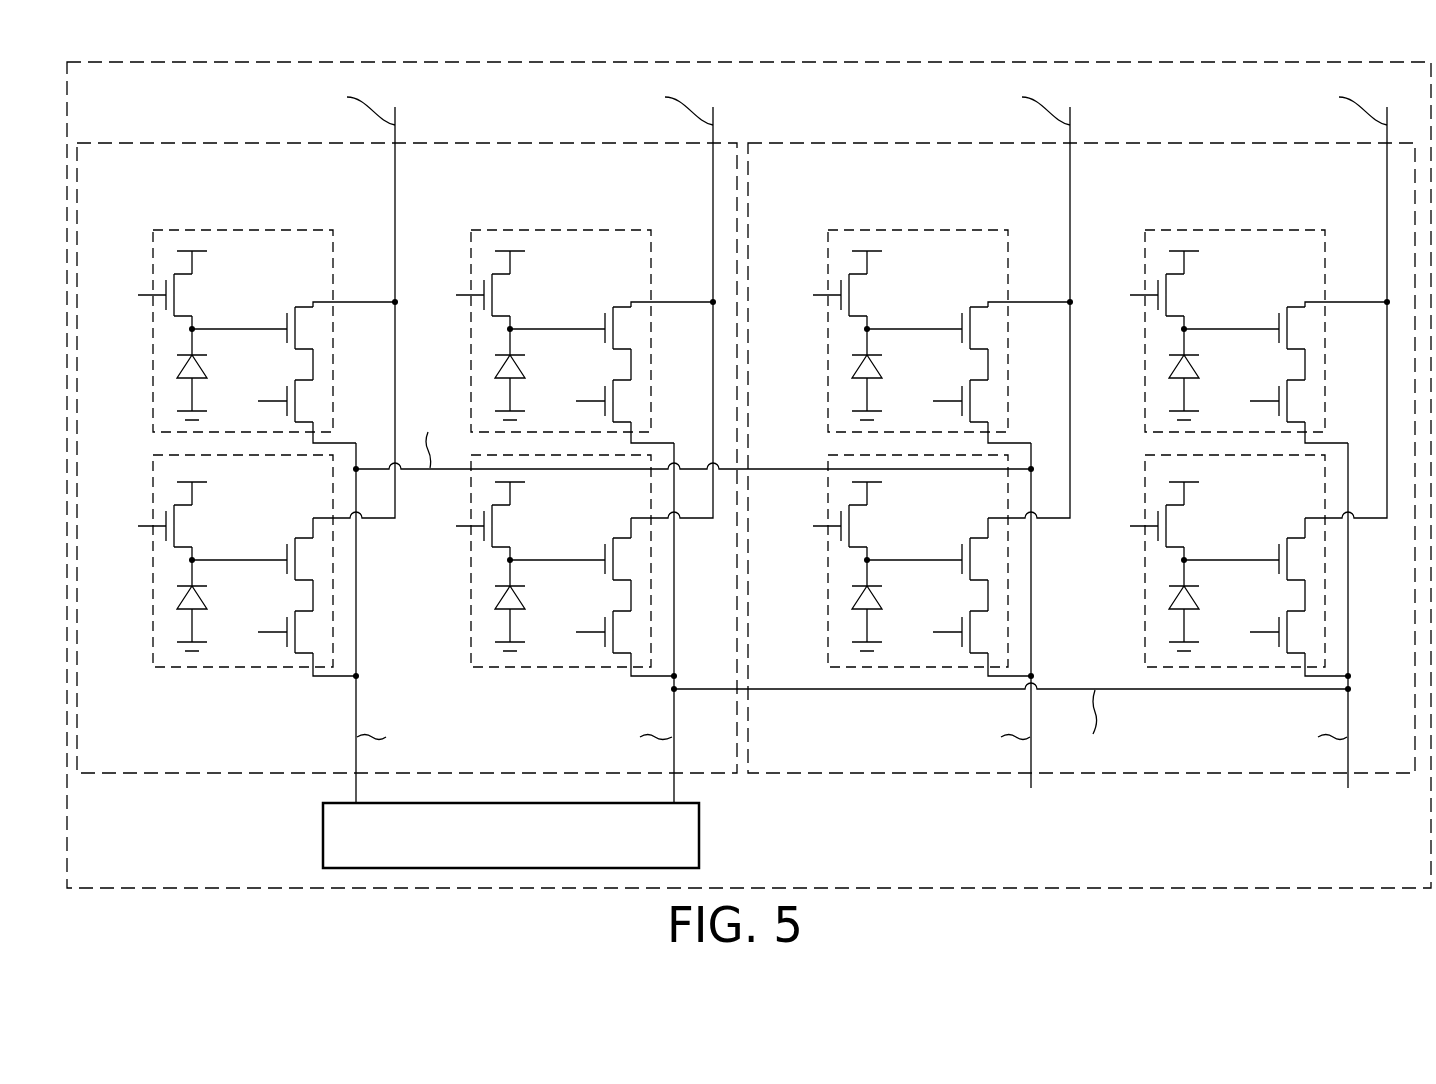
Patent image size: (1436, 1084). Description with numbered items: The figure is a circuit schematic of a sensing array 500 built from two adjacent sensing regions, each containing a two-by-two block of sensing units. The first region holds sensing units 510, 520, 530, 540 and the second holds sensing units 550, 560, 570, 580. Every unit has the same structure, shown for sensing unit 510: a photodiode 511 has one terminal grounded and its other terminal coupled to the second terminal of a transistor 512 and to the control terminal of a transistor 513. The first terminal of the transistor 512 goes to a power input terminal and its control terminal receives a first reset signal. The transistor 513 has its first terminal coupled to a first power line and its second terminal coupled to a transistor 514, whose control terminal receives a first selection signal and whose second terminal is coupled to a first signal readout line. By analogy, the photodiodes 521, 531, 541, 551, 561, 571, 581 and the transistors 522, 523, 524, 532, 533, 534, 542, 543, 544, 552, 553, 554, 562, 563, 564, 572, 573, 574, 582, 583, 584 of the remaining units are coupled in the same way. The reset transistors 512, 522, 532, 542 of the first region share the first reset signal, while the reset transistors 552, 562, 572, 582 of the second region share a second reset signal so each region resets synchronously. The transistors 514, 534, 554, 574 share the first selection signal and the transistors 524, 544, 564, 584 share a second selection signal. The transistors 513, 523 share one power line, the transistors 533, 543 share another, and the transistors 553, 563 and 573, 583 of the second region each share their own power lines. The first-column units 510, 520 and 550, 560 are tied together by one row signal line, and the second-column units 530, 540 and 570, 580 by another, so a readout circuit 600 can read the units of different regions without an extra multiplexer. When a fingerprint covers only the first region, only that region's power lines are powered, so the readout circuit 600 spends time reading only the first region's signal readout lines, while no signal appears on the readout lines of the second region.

The sensing array 500 is at (1308, 890).
The sensing unit 510 is at (163, 226).
The photodiode 511 is at (196, 365).
The transistor 512 is at (183, 297).
The transistor 513 is at (305, 327).
The transistor 514 is at (305, 399).
The sensing unit 520 is at (152, 472).
The photodiode 521 is at (196, 598).
The transistor 522 is at (183, 528).
The transistor 523 is at (305, 558).
The transistor 524 is at (305, 630).
The sensing unit 530 is at (481, 226).
The photodiode 531 is at (514, 365).
The transistor 532 is at (501, 297).
The transistor 533 is at (623, 327).
The transistor 534 is at (623, 399).
The sensing unit 540 is at (470, 630).
The photodiode 541 is at (514, 598).
The transistor 542 is at (501, 528).
The transistor 543 is at (623, 558).
The transistor 544 is at (623, 630).
The sensing unit 550 is at (838, 226).
The photodiode 551 is at (871, 365).
The transistor 552 is at (858, 297).
The transistor 553 is at (980, 327).
The transistor 554 is at (980, 399).
The sensing unit 560 is at (827, 630).
The photodiode 561 is at (871, 598).
The transistor 562 is at (858, 528).
The transistor 563 is at (980, 558).
The transistor 564 is at (980, 630).
The sensing unit 570 is at (1155, 226).
The photodiode 571 is at (1188, 365).
The transistor 572 is at (1175, 297).
The transistor 573 is at (1297, 327).
The transistor 574 is at (1297, 399).
The sensing unit 580 is at (1144, 500).
The photodiode 581 is at (1188, 598).
The transistor 582 is at (1175, 528).
The transistor 583 is at (1297, 558).
The transistor 584 is at (1297, 630).
The readout circuit 600 is at (322, 833).